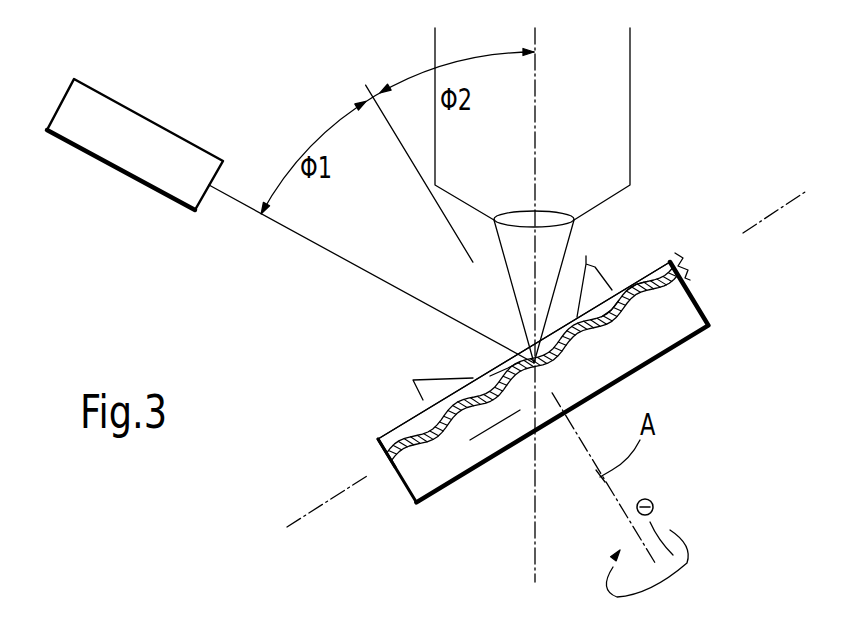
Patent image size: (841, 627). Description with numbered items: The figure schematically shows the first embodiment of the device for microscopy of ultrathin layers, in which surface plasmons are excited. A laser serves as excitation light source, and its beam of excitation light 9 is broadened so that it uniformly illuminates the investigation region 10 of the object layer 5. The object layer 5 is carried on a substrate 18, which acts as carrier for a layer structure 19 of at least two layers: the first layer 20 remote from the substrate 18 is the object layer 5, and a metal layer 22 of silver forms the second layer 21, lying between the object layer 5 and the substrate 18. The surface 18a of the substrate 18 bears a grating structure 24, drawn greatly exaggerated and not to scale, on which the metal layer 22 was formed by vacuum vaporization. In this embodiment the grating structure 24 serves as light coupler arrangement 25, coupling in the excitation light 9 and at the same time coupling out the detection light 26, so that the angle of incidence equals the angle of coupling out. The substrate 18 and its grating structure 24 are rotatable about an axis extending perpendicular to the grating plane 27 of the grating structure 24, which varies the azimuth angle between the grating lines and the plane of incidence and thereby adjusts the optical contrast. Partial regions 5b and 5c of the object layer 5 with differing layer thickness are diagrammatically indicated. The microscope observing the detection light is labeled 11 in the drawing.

The object layer 5 is at (420, 428).
The partial region of the object layer 5b is at (594, 270).
The partial region of the object layer 5c is at (508, 368).
The excitation light 9 is at (332, 255).
The investigation region 10 is at (509, 326).
The observation microscope 11 is at (597, 81).
The substrate 18 is at (670, 320).
The surface of the substrate 18a is at (640, 292).
The layer structure 19 is at (697, 261).
The first layer 20 is at (368, 448).
The second layer 21 is at (384, 479).
The metal layer 22 is at (475, 410).
The grating structure 24 is at (462, 375).
The light coupler arrangement 25 is at (616, 254).
The detection light 26 is at (555, 245).
The grating plane 27 is at (757, 223).